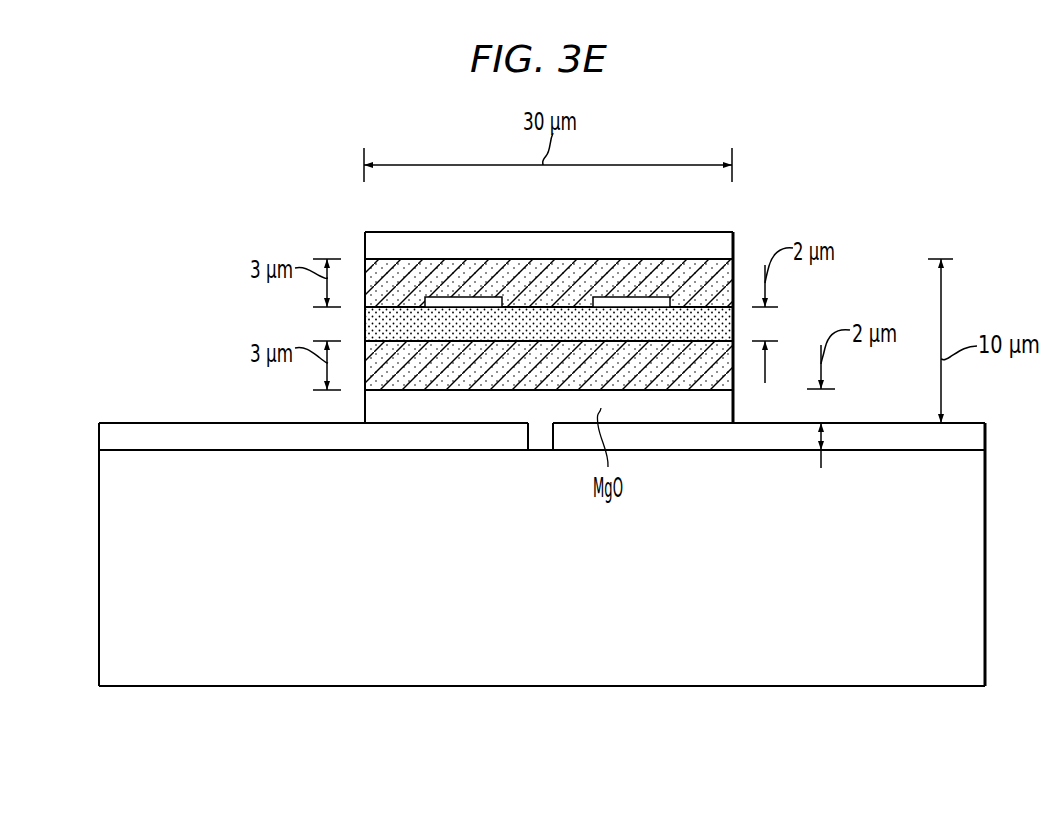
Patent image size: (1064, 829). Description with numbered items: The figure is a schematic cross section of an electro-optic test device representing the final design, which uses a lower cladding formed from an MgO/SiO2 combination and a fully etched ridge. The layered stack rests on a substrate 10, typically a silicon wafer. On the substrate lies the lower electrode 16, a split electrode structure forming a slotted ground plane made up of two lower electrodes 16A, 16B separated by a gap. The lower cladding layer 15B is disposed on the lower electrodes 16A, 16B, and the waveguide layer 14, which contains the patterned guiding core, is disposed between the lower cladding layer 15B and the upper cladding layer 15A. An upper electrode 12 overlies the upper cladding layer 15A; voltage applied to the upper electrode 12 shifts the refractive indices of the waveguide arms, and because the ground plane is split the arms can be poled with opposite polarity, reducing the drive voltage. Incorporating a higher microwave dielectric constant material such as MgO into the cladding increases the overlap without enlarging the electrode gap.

The substrate 10 is at (985, 565).
The upper electrode 12 is at (365, 244).
The waveguide layer 14 is at (690, 300).
The upper cladding layer 15A is at (532, 267).
The lower cladding layer 15B is at (383, 385).
The lower electrode 16 is at (541, 475).
The lower electrode 16A is at (985, 432).
The lower electrode 16B is at (99, 445).